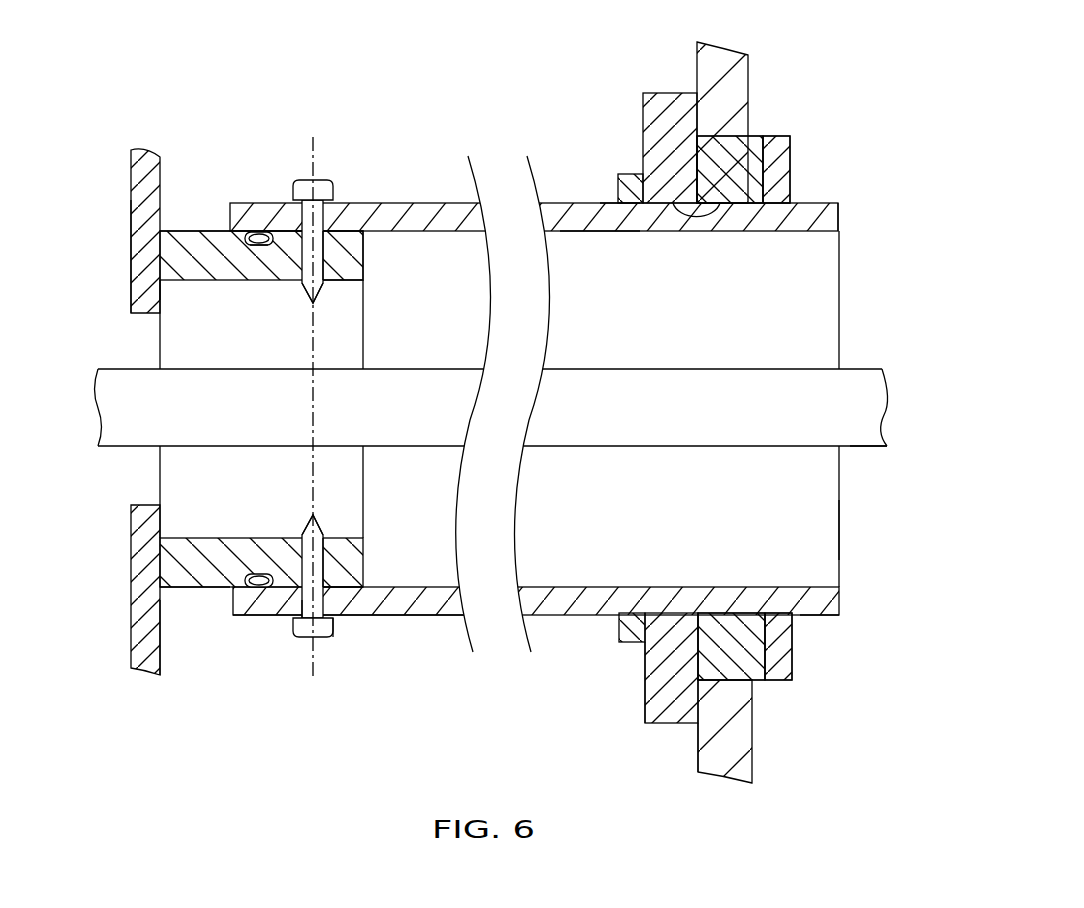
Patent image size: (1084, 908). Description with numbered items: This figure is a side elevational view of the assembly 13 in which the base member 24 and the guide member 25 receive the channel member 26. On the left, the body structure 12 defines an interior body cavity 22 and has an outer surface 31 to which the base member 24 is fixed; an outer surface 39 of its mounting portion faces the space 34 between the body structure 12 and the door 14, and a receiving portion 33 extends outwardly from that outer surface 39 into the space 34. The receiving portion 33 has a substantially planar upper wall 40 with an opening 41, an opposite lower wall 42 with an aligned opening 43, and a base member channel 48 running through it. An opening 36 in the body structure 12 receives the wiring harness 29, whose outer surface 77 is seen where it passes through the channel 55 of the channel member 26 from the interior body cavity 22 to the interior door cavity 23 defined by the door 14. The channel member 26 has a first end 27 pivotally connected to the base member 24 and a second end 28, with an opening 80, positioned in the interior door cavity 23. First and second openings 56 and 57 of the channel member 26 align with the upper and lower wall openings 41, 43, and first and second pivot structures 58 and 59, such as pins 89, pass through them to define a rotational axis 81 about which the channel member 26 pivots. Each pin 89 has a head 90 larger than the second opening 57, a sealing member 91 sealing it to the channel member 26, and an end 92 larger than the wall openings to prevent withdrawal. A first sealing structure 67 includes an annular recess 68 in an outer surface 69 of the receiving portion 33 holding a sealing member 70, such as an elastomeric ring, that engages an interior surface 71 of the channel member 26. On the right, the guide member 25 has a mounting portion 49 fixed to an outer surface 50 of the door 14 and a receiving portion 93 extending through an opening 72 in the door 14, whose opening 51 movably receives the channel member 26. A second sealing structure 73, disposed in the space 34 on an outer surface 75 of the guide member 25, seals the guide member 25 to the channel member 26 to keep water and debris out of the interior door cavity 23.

The body structure 12 is at (149, 149).
The shaft assembly 13 is at (350, 723).
The door 14 is at (720, 774).
The interior body cavity 22 is at (117, 288).
The interior door cavity 23 is at (839, 672).
The base member 24 is at (175, 229).
The guide member 25 is at (659, 91).
The channel member 26 is at (422, 618).
The first end 27 is at (230, 218).
The second end 28 is at (840, 212).
The wiring harness 29 is at (866, 451).
The outer surface 31 is at (163, 658).
The receiving portion 33 is at (200, 230).
The space 34 is at (589, 174).
The opening 36 is at (158, 505).
The outer surface 39 is at (163, 639).
The upper wall 40 is at (352, 248).
The opening 41 is at (327, 265).
The lower wall 42 is at (352, 563).
The opening 43 is at (327, 556).
The base member channel 48 is at (342, 332).
The mounting portion 49 is at (672, 678).
The outer surface 50 is at (698, 755).
The opening 51 is at (720, 203).
The channel 55 is at (785, 535).
The first opening 56 is at (300, 215).
The second opening 57 is at (330, 597).
The first pivot structure 58 is at (323, 180).
The second pivot structure 59 is at (303, 638).
The first sealing structure 67 is at (252, 571).
The annular recess 68 is at (255, 247).
The outer surface 69 is at (352, 218).
The sealing member 70 is at (255, 234).
The interior surface 71 is at (594, 233).
The opening 72 is at (763, 157).
The second sealing structure 73 is at (628, 172).
The outer surface 75 is at (645, 708).
The outer surface 77 is at (708, 368).
The opening 80 is at (840, 268).
The rotational axis 81 is at (310, 468).
The pin 89 is at (305, 253).
The head 90 is at (328, 638).
The sealing member 91 is at (298, 619).
The end 92 is at (308, 292).
The receiving portion 93 is at (738, 637).